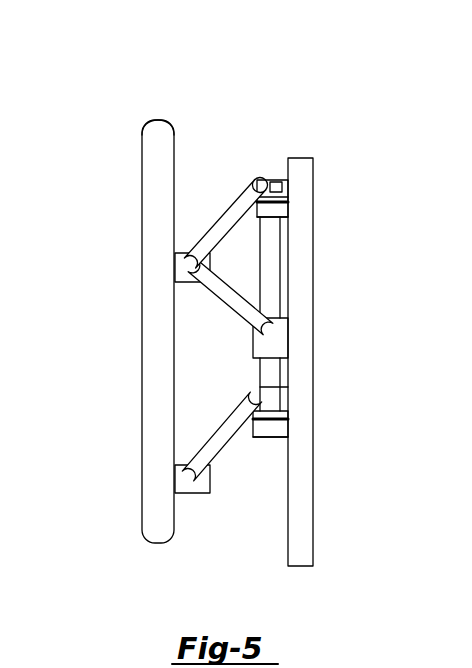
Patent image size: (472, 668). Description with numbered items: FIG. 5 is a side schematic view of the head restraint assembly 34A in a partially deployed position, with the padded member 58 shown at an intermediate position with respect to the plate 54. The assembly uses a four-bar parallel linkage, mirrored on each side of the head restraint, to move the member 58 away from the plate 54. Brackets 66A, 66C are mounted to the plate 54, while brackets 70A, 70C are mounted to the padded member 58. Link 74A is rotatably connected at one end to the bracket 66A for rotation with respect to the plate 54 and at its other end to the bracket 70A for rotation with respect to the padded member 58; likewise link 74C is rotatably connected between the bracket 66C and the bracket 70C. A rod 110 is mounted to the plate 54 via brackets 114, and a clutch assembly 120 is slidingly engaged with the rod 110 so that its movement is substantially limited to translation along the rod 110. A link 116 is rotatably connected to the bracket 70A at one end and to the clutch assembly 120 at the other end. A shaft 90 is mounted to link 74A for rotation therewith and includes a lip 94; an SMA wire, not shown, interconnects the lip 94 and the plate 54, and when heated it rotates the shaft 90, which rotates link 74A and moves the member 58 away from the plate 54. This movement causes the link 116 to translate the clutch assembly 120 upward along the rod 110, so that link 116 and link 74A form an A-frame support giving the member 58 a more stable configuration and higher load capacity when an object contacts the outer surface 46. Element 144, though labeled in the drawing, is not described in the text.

The head restraint assembly 34A is at (73, 103).
The outer surface 46 is at (142, 158).
The padded member 58 is at (157, 127).
The plate 54 is at (313, 157).
The bracket 70A is at (187, 276).
The bracket 70C is at (205, 492).
The link 74A is at (215, 218).
The link 74C is at (203, 440).
The shaft 90 is at (253, 178).
The lip 94 is at (285, 189).
The bracket 66A is at (283, 197).
The bracket 66C is at (257, 400).
The stop plate 144 is at (283, 211).
The rod 110 is at (270, 377).
The link 116 is at (220, 307).
The clutch assembly 120 is at (277, 352).
The brackets 114 is at (267, 438).